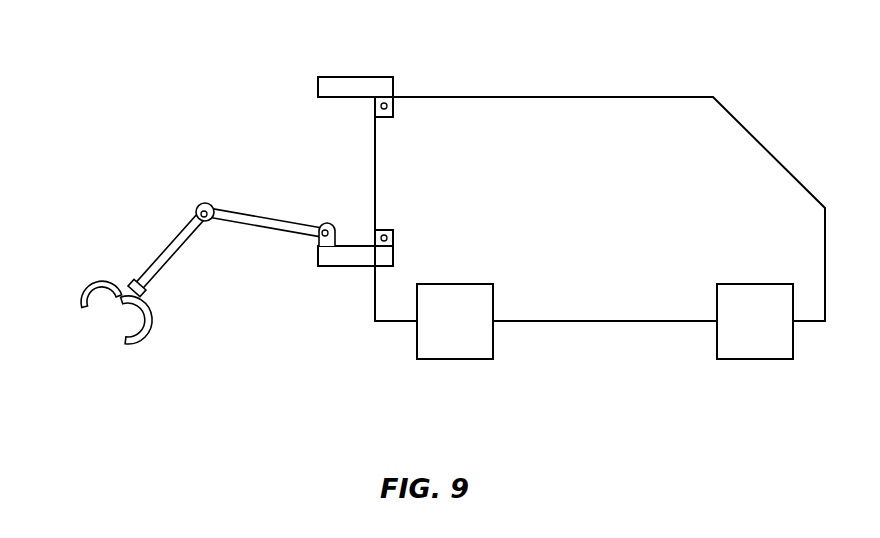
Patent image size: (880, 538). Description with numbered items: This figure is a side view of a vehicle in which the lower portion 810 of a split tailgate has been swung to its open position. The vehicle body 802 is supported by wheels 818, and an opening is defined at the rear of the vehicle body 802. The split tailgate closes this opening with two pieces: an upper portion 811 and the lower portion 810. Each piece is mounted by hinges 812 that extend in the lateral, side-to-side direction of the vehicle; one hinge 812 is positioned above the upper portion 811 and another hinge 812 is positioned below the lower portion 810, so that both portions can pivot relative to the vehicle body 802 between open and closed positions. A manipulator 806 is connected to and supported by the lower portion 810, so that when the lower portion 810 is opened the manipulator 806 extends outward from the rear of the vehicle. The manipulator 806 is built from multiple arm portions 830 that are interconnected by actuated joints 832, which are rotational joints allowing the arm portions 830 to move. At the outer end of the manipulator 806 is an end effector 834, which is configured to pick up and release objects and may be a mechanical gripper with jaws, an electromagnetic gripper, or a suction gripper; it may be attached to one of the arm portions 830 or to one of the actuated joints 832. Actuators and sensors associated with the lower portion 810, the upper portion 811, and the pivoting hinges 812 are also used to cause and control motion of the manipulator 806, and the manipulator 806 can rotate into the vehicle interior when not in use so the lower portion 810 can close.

The vehicle body 802 is at (760, 143).
The manipulator 806 is at (114, 313).
The lower portion 810 is at (343, 267).
The upper portion 811 is at (343, 77).
The hinges 812 is at (389, 104).
The wheels 818 is at (716, 355).
The arm portions 830 is at (166, 262).
The actuated joints 832 is at (205, 203).
The end effector 834 is at (142, 340).